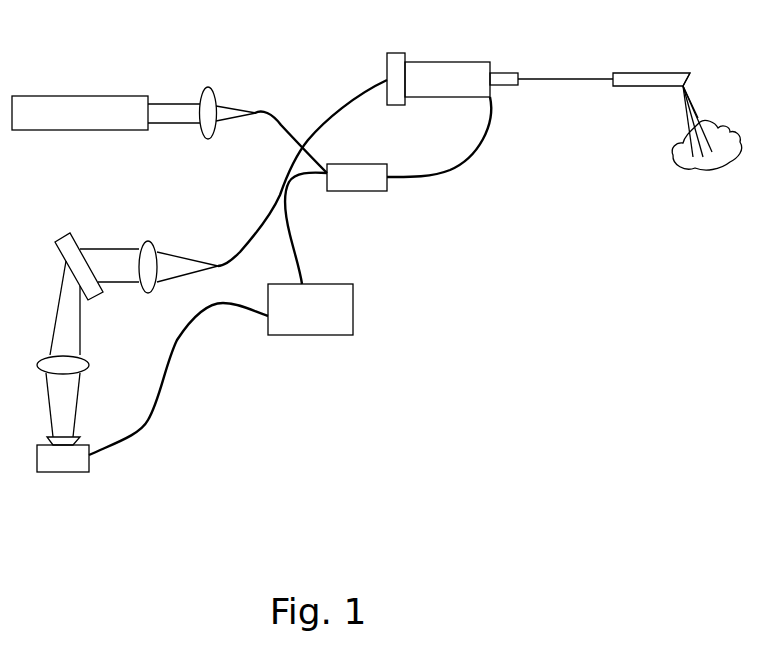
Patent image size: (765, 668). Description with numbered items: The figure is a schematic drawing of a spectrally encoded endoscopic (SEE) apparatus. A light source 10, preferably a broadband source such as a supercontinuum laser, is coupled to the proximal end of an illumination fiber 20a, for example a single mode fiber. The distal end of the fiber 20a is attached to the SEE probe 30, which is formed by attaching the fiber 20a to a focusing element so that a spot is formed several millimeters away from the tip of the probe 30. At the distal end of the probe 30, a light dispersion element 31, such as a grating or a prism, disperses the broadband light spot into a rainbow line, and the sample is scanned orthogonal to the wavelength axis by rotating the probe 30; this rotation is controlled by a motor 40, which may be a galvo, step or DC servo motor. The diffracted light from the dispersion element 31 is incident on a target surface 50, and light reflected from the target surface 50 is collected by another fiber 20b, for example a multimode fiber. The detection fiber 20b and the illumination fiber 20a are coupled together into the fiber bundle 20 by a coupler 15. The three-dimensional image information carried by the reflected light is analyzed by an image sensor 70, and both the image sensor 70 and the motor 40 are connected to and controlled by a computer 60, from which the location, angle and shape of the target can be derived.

The light source 10 is at (134, 113).
The coupler 15 is at (357, 177).
The fiber bundle 20 is at (483, 140).
The fiber 20a is at (290, 130).
The fiber 20b is at (263, 212).
The SEE probe 30 is at (652, 73).
The light dispersion element 31 is at (690, 82).
The motor 40 is at (452, 79).
The target surface 50 is at (706, 153).
The computer 60 is at (310, 309).
The image sensor 70 is at (63, 454).